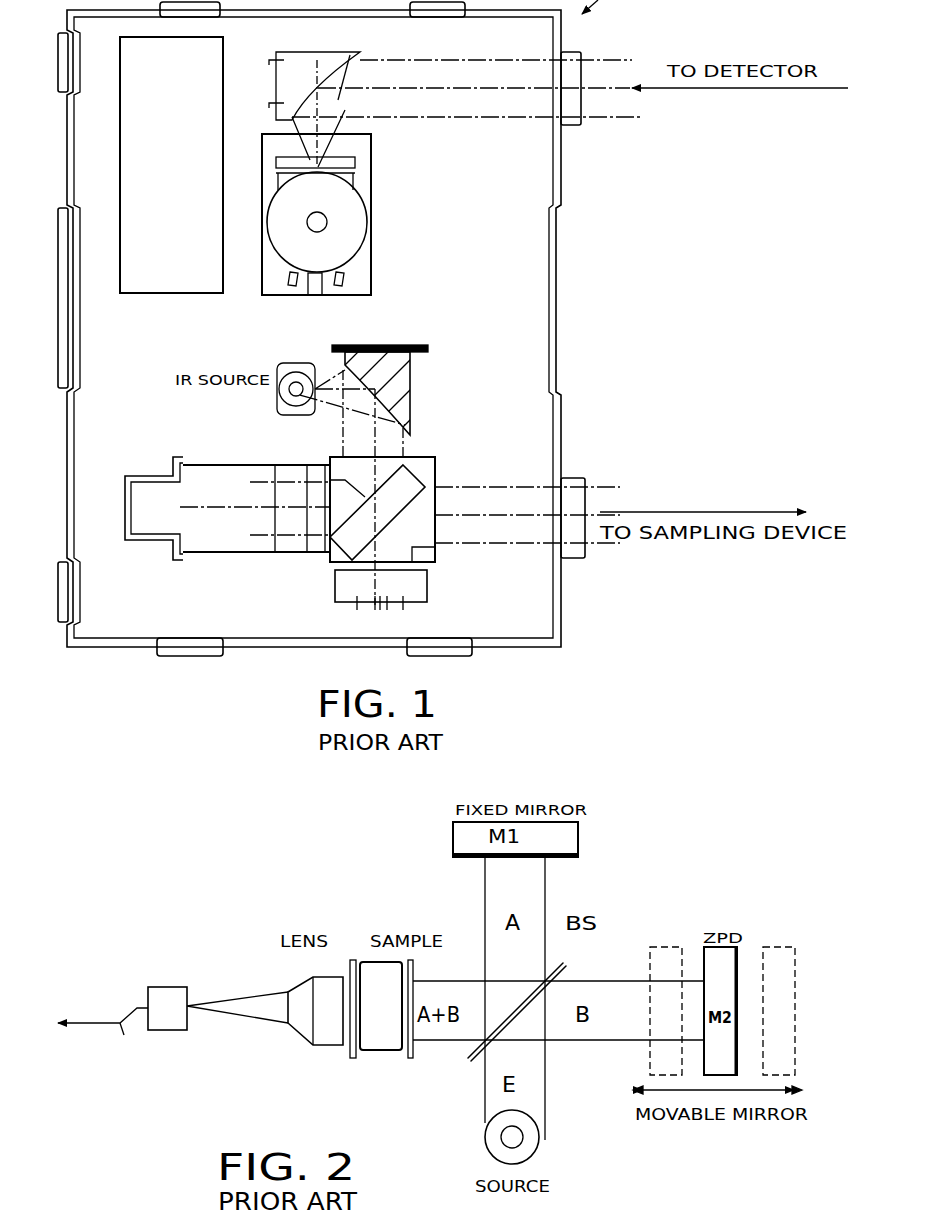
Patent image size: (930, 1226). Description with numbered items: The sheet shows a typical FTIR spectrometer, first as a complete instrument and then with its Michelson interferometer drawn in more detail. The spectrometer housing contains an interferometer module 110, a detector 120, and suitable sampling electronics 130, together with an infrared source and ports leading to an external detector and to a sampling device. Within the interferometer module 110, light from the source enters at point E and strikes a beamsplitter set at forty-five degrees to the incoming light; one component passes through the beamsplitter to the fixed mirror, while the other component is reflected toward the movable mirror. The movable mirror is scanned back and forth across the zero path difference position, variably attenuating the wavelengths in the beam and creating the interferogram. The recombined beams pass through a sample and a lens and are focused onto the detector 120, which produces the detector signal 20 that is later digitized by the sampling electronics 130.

In FIG. 1, the interferometer module 110 is at (325, 577).
In FIG. 1, the detector 120 is at (374, 222).
In FIG. 2, the detector 120 is at (175, 964).
In FIG. 1, the sampling electronics 130 is at (179, 146).
In FIG. 2, the detector signal 20 is at (95, 1043).